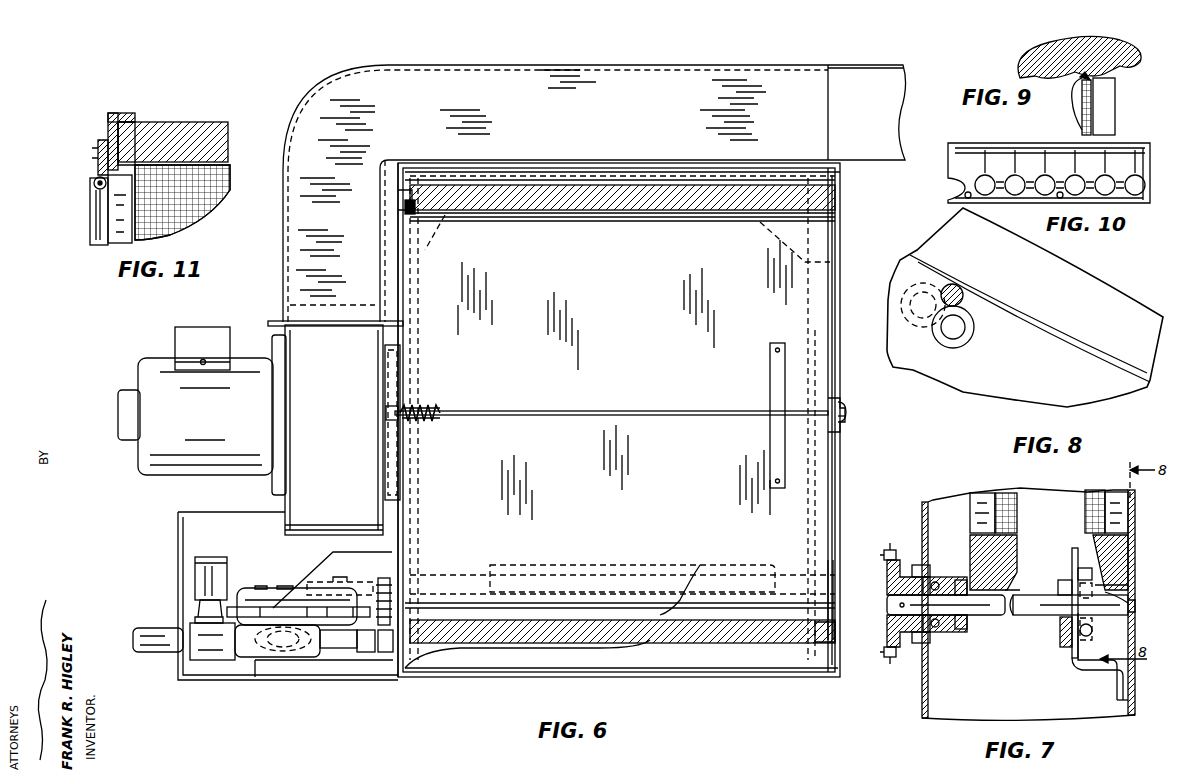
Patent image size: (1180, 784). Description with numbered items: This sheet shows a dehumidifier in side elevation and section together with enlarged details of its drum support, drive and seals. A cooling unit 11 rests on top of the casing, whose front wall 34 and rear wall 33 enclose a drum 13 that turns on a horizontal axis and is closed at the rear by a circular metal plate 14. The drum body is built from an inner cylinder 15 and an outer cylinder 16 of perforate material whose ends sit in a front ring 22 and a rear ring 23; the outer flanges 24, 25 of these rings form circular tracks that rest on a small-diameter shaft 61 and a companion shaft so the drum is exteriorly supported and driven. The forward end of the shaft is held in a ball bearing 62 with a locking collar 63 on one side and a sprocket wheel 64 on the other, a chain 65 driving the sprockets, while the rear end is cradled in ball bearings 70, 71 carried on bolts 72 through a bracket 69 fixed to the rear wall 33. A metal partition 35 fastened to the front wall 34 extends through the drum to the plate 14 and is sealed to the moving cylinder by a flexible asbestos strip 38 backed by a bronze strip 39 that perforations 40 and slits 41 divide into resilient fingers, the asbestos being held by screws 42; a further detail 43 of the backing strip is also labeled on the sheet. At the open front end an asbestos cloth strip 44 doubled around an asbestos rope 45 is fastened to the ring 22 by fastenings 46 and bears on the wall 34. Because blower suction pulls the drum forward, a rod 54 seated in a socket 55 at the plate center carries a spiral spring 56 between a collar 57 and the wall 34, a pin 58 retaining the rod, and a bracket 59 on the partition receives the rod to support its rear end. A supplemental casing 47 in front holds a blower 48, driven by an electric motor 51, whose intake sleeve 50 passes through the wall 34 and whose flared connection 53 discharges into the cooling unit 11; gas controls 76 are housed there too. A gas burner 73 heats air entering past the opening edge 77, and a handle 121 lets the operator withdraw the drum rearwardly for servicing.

In FIG. 6, the cooling unit 11 is at (745, 75).
In FIG. 6, the drum 13 is at (715, 212).
In FIG. 6, the circular metal plate 14 is at (838, 335).
In FIG. 7, the circular metal plate 14 is at (1136, 508).
In FIG. 6, the inner cylinder 15 is at (645, 208).
In FIG. 11, the inner cylinder 15 is at (188, 122).
In FIG. 6, the outer cylinder 16 is at (590, 185).
In FIG. 9, the outer cylinder 16 is at (1125, 68).
In FIG. 11, the outer cylinder 16 is at (230, 180).
In FIG. 7, the front ring 22 is at (970, 548).
In FIG. 11, the front ring 22 is at (108, 118).
In FIG. 7, the rear ring 23 is at (1136, 550).
In FIG. 8, the rear ring 23 is at (1080, 301).
In FIG. 7, the outer flange 24 is at (1002, 592).
In FIG. 11, the outer flange 24 is at (130, 120).
In FIG. 7, the outer flange 25 is at (1136, 607).
In FIG. 6, the rear wall 33 is at (842, 660).
In FIG. 7, the rear wall 33 is at (1132, 693).
In FIG. 6, the front wall 34 is at (398, 275).
In FIG. 7, the front wall 34 is at (922, 688).
In FIG. 6, the metal partition 35 is at (625, 380).
In FIG. 9, the metal partition 35 is at (1110, 118).
In FIG. 6, the flexible asbestos strip 38 is at (835, 490).
In FIG. 9, the flexible asbestos strip 38 is at (1110, 45).
In FIG. 9, the backing strip 39 is at (1082, 100).
In FIG. 10, the backing strip 39 is at (1028, 198).
In FIG. 10, the perforations 40 is at (960, 182).
In FIG. 10, the slits 41 is at (1045, 150).
In FIG. 9, the screws 42 is at (1082, 125).
In FIG. 10, the fastener hole 43 is at (965, 198).
In FIG. 6, the asbestos cloth strip 44 is at (400, 208).
In FIG. 11, the asbestos cloth strip 44 is at (90, 210).
In FIG. 11, the asbestos rope 45 is at (95, 186).
In FIG. 11, the fastenings 46 is at (92, 153).
In FIG. 6, the supplemental casing 47 is at (182, 510).
In FIG. 6, the blower 48 is at (300, 530).
In FIG. 6, the collars or sleeves 50 is at (396, 358).
In FIG. 6, the electric motor 51 is at (202, 411).
In FIG. 6, the flared connection 53 is at (290, 225).
In FIG. 6, the rod 54 is at (600, 416).
In FIG. 6, the socket 55 is at (845, 400).
In FIG. 6, the spiral spring 56 is at (435, 406).
In FIG. 6, the collar 57 is at (440, 421).
In FIG. 6, the pin 58 is at (390, 418).
In FIG. 6, the bracket 59 is at (770, 381).
In FIG. 6, the shaft 61 is at (705, 636).
In FIG. 7, the shaft 61 is at (1033, 620).
In FIG. 8, the shaft 61 is at (964, 293).
In FIG. 7, the ball bearing 62 is at (940, 576).
In FIG. 7, the locking collar 63 is at (962, 632).
In FIG. 6, the sprocket wheel 64 is at (840, 628).
In FIG. 6, the chain 65 is at (385, 576).
In FIG. 7, the chain 65 is at (891, 553).
In FIG. 6, the brackets 69 is at (838, 545).
In FIG. 7, the brackets 69 is at (1076, 672).
In FIG. 8, the brackets 69 is at (1000, 392).
In FIG. 7, the ball bearing 70 is at (1080, 645).
In FIG. 8, the ball bearing 70 is at (950, 348).
In FIG. 7, the ball bearing 71 is at (1080, 560).
In FIG. 8, the ball bearing 71 is at (905, 317).
In FIG. 7, the bolts 72 is at (1060, 635).
In FIG. 6, the gas burner 73 is at (612, 565).
In FIG. 6, the gas controls 76 is at (253, 605).
In FIG. 6, the upper edge of air opening 77 is at (690, 580).
In FIG. 6, the handle or hand-hold 121 is at (850, 415).